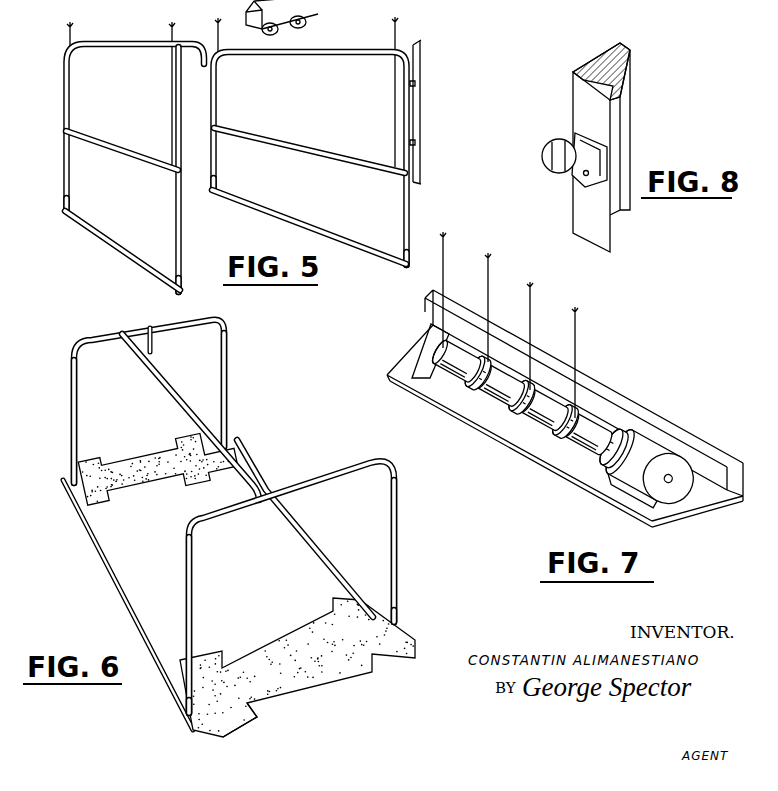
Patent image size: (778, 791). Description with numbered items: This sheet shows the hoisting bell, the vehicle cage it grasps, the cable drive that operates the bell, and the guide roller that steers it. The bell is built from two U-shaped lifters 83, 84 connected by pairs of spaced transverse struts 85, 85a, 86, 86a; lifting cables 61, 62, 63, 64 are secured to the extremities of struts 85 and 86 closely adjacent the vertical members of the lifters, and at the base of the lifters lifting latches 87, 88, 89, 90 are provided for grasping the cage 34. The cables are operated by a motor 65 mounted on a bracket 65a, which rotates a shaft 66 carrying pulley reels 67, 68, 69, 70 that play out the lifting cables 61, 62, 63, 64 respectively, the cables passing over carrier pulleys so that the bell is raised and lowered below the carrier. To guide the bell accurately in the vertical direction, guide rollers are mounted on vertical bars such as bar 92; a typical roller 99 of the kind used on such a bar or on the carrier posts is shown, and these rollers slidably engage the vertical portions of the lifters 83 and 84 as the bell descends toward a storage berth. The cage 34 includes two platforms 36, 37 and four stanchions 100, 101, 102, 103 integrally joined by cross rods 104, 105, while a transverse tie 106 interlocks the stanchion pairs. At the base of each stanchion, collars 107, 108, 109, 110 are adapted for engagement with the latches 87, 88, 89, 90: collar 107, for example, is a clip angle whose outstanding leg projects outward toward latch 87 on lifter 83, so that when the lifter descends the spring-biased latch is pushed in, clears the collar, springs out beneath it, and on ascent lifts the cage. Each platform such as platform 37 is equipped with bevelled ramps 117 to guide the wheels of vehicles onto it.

In FIG. 6, the cage 34 is at (255, 405).
In FIG. 6, the platform 36 is at (150, 480).
In FIG. 6, the platform 37 is at (278, 650).
In FIG. 5, the cable 61 is at (170, 25).
In FIG. 7, the cable 61 is at (580, 327).
In FIG. 5, the cable 62 is at (397, 25).
In FIG. 7, the cable 62 is at (534, 298).
In FIG. 5, the cable 63 is at (215, 22).
In FIG. 7, the cable 63 is at (492, 272).
In FIG. 5, the cable 64 is at (67, 33).
In FIG. 7, the cable 64 is at (447, 250).
In FIG. 7, the motor 65 is at (670, 440).
In FIG. 7, the bracket 65a is at (603, 485).
In FIG. 7, the shaft 66 is at (617, 440).
In FIG. 7, the pulley reel 67 is at (583, 453).
In FIG. 7, the pulley reel 68 is at (543, 420).
In FIG. 7, the pulley reel 69 is at (495, 398).
In FIG. 7, the pulley reel 70 is at (455, 377).
In FIG. 5, the U-shaped lifter 83 is at (296, 55).
In FIG. 5, the U-shaped lifter 84 is at (112, 48).
In FIG. 5, the transverse strut 85 is at (125, 150).
In FIG. 5, the transverse strut 85a is at (107, 240).
In FIG. 5, the transverse strut 86 is at (300, 147).
In FIG. 5, the transverse strut 86a is at (303, 225).
In FIG. 5, the lifting latch 87 is at (175, 278).
In FIG. 5, the lifting latch 88 is at (400, 254).
In FIG. 5, the lifting latch 89 is at (218, 192).
In FIG. 5, the lifting latch 90 is at (68, 207).
In FIG. 8, the vertical bar 92 is at (625, 125).
In FIG. 8, the roller 99 is at (553, 158).
In FIG. 6, the stanchion 100 is at (192, 590).
In FIG. 6, the stanchion 101 is at (398, 522).
In FIG. 6, the stanchion 102 is at (76, 417).
In FIG. 6, the stanchion 103 is at (222, 362).
In FIG. 6, the cross rod 104 is at (327, 470).
In FIG. 6, the cross rod 105 is at (105, 335).
In FIG. 6, the transverse tie 106 is at (260, 458).
In FIG. 6, the collar 107 is at (187, 697).
In FIG. 6, the collar 108 is at (400, 620).
In FIG. 6, the collar 109 is at (207, 432).
In FIG. 6, the collar 110 is at (65, 492).
In FIG. 6, the bevelled ramp 117 is at (240, 720).